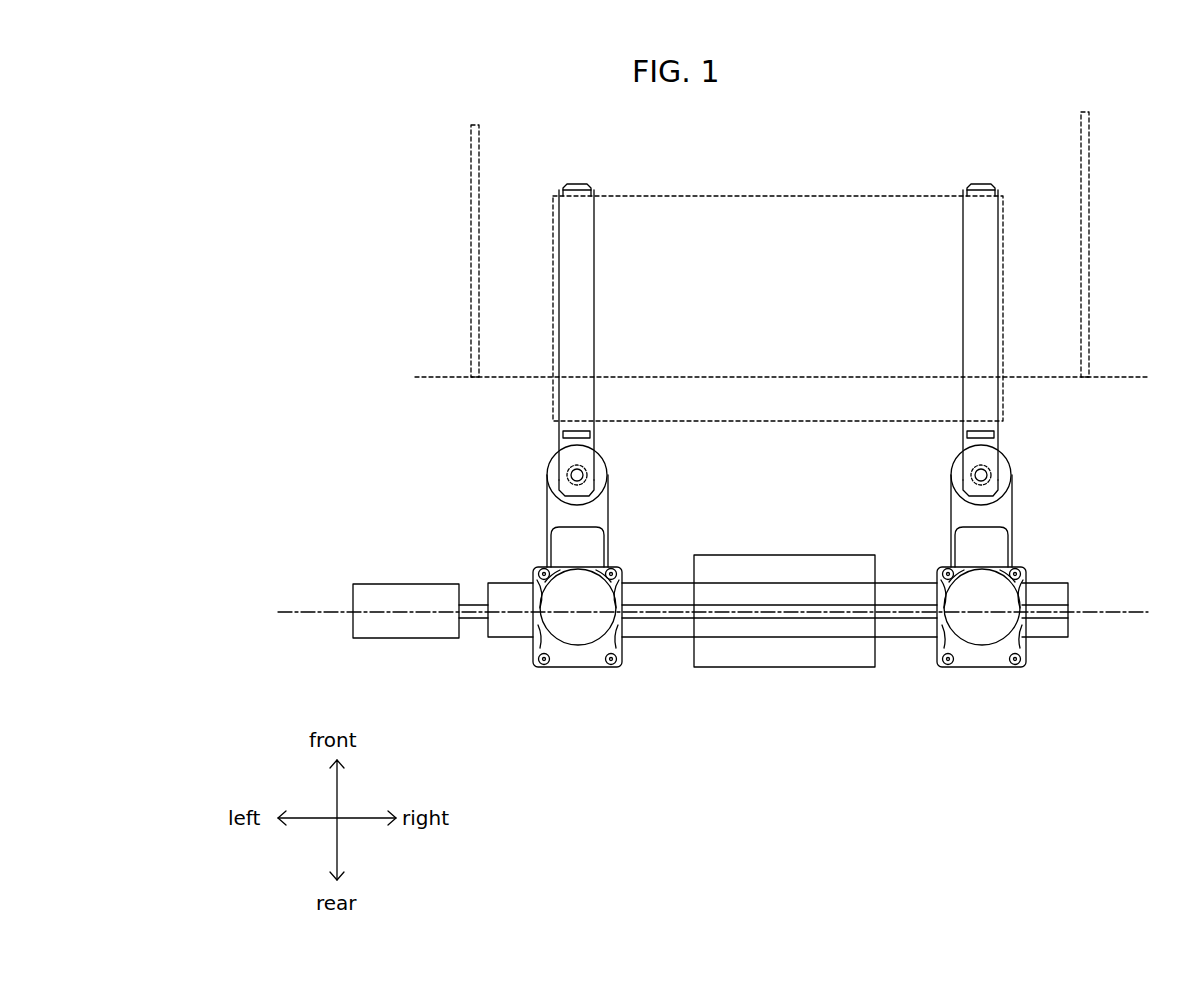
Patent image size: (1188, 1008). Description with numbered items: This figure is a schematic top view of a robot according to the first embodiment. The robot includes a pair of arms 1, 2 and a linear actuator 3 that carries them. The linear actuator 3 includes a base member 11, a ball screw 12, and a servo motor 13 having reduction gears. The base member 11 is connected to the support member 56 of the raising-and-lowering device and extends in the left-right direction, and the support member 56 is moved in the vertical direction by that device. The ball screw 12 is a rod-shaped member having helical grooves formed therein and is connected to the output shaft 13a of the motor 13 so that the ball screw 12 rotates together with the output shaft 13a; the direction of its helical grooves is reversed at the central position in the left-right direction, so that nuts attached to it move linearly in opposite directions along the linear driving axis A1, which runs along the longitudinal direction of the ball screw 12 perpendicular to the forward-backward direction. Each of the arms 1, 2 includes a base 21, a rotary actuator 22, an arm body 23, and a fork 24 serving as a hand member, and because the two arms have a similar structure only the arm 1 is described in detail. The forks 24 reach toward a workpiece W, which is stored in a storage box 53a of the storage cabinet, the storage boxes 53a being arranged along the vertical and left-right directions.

The arm 1 is at (571, 476).
The arm 2 is at (1037, 478).
The linear actuator 3 is at (423, 625).
The base member 11 is at (515, 638).
The ball screw 12 is at (1058, 612).
The servo motor 13 is at (382, 600).
The output shaft 13a is at (472, 600).
The base 21 is at (586, 660).
The rotary actuator 22 is at (598, 582).
The arm body 23 is at (592, 511).
The fork 24 is at (582, 252).
The support member 56 is at (817, 655).
The storage box 53a is at (476, 374).
The linear driving axis A1 is at (699, 612).
The workpiece W is at (813, 192).